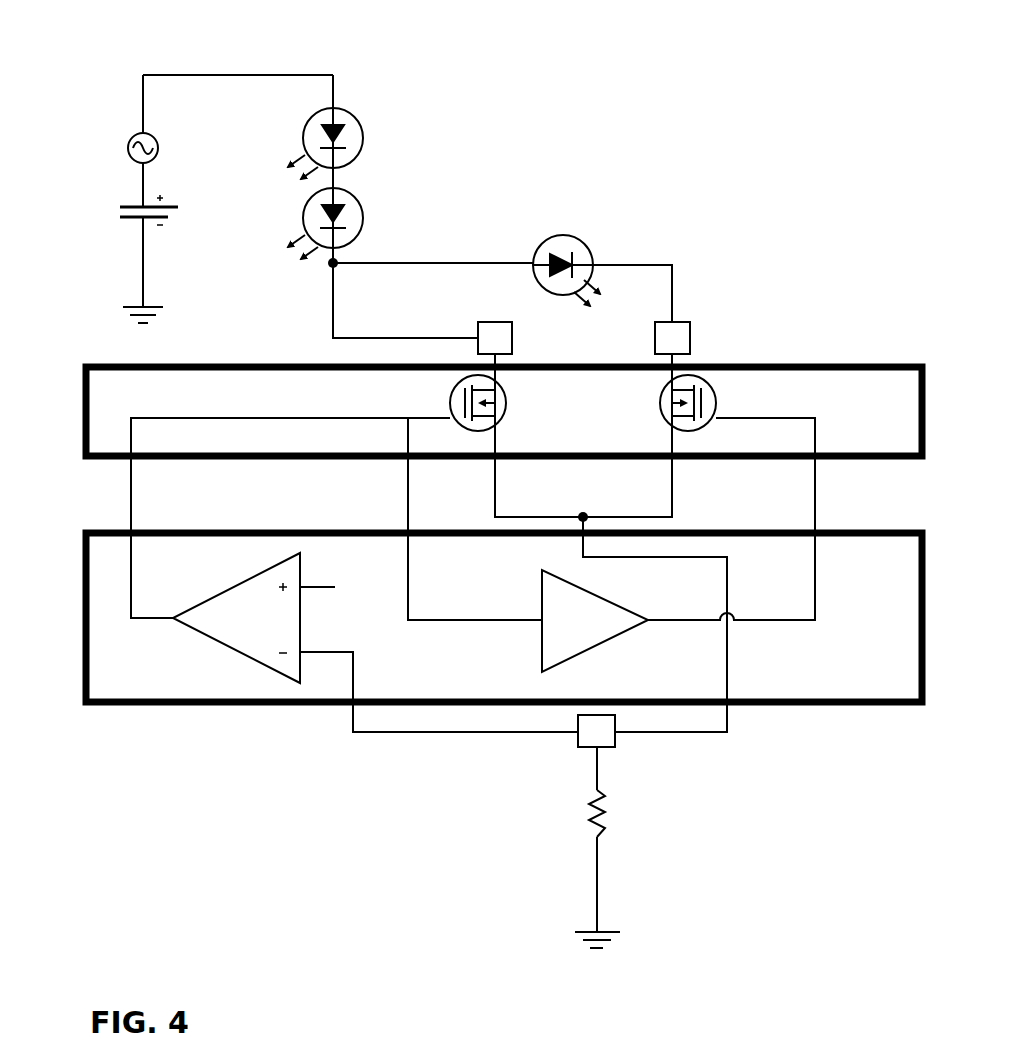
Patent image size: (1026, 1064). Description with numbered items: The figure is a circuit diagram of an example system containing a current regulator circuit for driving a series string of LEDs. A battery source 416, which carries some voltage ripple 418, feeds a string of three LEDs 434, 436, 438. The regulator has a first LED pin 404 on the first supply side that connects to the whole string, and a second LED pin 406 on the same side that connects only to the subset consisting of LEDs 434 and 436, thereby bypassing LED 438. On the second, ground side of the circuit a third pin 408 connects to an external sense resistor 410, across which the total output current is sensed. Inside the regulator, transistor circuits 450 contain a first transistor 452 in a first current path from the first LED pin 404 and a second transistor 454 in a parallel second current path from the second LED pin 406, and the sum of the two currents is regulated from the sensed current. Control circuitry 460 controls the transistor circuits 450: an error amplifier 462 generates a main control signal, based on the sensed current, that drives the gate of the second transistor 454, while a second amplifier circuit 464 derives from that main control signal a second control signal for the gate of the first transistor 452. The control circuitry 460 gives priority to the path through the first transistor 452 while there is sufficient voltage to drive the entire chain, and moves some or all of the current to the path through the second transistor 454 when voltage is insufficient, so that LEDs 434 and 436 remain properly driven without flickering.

The voltage ripple 418 is at (131, 136).
The battery source 416 is at (118, 206).
The LED 434 is at (360, 124).
The LED 436 is at (360, 204).
The LED 438 is at (585, 245).
The second LED pin 406 is at (492, 321).
The first LED pin 404 is at (682, 322).
The transistor circuits 450 is at (120, 364).
The Q2 transistor 454 is at (452, 400).
The Q1 transistor 452 is at (715, 401).
The control circuitry 460 is at (110, 530).
The error amplifier 462 is at (218, 645).
The second amplifier circuit 464 is at (540, 634).
The third pin 408 is at (580, 744).
The sense resistor 410 is at (590, 814).